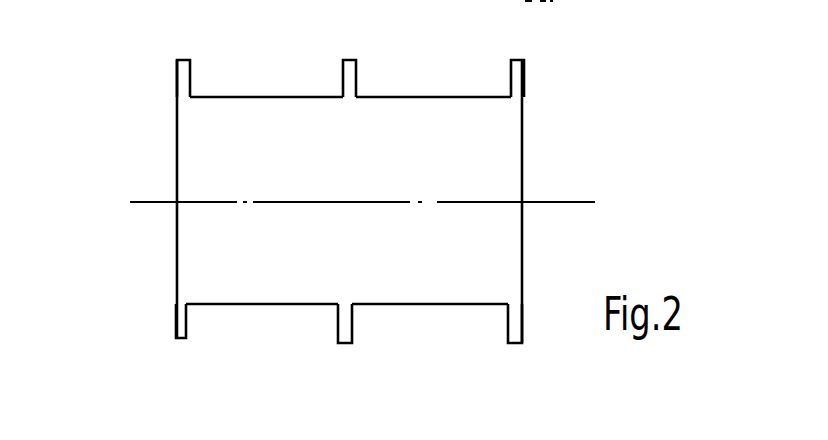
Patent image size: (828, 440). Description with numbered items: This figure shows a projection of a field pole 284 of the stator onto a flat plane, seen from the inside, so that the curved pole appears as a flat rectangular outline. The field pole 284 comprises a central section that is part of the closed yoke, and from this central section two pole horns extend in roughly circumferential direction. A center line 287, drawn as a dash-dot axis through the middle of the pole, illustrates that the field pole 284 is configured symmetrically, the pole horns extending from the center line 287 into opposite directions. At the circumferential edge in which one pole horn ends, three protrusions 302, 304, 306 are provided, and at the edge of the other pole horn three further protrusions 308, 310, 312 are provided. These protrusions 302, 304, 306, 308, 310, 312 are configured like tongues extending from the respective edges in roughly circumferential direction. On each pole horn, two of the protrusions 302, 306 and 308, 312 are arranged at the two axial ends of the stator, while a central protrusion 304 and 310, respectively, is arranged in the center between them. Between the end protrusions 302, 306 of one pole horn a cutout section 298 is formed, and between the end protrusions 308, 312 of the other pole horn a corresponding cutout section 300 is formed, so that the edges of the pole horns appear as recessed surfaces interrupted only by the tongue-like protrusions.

The field pole 284 is at (495, 162).
The center line 287 is at (582, 202).
The cutout section 298 is at (273, 90).
The cutout section 300 is at (258, 318).
The protrusion 302 is at (178, 70).
The central protrusion 304 is at (350, 78).
The protrusion 306 is at (525, 75).
The protrusion 308 is at (172, 320).
The central protrusion 310 is at (347, 328).
The protrusion 312 is at (517, 325).